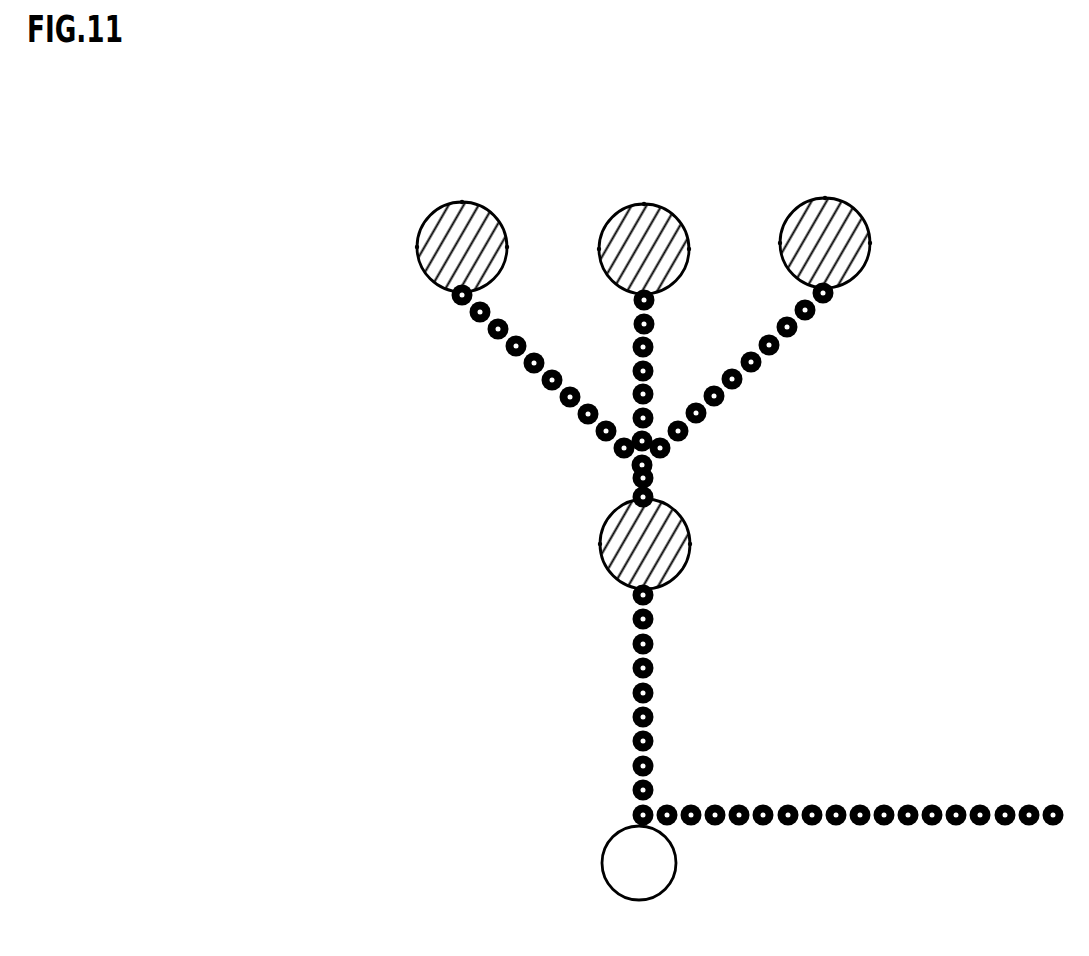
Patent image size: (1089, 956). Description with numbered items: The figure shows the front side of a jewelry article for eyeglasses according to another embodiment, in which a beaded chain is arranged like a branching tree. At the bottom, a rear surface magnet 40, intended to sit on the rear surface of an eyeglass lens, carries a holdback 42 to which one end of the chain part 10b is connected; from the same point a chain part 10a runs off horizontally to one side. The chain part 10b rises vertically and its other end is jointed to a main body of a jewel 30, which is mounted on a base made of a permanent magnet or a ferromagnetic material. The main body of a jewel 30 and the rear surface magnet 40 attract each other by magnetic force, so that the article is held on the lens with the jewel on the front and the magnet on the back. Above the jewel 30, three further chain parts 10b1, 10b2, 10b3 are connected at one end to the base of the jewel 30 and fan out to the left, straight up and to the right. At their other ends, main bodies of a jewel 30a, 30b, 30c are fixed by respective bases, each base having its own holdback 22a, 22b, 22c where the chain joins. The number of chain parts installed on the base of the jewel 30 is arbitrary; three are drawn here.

The main body of a jewel 30a is at (462, 202).
The main body of a jewel 30b is at (644, 204).
The main body of a jewel 30c is at (825, 198).
The main body of a jewel 30 is at (677, 568).
The rear surface magnet 40 is at (628, 892).
The holdback 42 is at (630, 818).
The holdback 22a is at (451, 299).
The holdback 22b is at (632, 298).
The holdback 22c is at (836, 300).
The chain part 10a is at (986, 806).
The chain part 10b is at (656, 668).
The chain part 10b1 is at (536, 376).
The chain part 10b2 is at (658, 342).
The chain part 10b3 is at (760, 388).